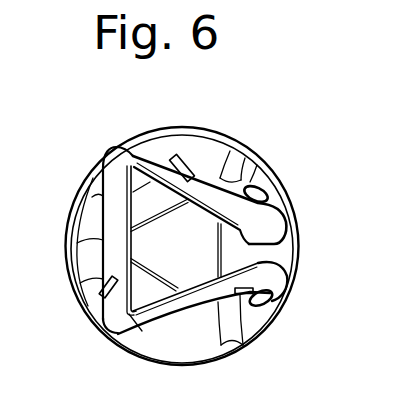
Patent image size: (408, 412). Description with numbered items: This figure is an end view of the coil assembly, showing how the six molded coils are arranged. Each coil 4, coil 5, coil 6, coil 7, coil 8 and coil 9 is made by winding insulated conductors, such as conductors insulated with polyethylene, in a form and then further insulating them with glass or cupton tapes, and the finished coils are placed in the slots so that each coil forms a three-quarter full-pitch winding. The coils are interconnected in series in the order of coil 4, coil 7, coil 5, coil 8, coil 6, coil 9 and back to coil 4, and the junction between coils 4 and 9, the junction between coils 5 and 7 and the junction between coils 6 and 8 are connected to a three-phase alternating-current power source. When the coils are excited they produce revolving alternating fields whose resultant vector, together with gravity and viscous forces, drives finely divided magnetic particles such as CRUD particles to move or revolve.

The coil 4 is at (218, 152).
The coil 5 is at (252, 177).
The coil 6 is at (205, 343).
The coil 7 is at (275, 223).
The coil 8 is at (143, 340).
The coil 9 is at (104, 314).